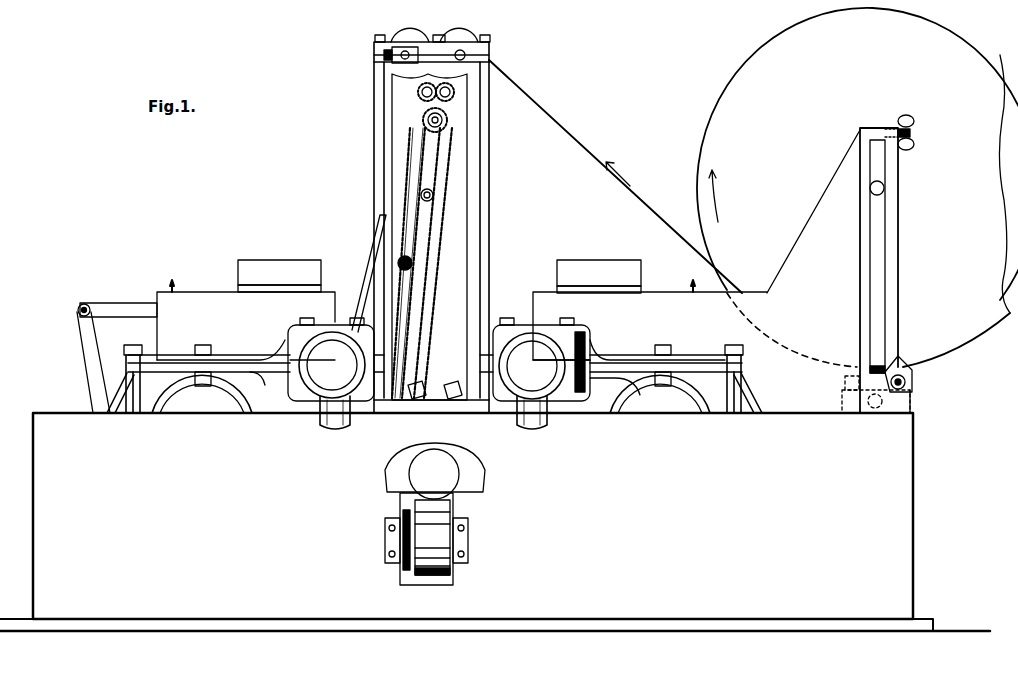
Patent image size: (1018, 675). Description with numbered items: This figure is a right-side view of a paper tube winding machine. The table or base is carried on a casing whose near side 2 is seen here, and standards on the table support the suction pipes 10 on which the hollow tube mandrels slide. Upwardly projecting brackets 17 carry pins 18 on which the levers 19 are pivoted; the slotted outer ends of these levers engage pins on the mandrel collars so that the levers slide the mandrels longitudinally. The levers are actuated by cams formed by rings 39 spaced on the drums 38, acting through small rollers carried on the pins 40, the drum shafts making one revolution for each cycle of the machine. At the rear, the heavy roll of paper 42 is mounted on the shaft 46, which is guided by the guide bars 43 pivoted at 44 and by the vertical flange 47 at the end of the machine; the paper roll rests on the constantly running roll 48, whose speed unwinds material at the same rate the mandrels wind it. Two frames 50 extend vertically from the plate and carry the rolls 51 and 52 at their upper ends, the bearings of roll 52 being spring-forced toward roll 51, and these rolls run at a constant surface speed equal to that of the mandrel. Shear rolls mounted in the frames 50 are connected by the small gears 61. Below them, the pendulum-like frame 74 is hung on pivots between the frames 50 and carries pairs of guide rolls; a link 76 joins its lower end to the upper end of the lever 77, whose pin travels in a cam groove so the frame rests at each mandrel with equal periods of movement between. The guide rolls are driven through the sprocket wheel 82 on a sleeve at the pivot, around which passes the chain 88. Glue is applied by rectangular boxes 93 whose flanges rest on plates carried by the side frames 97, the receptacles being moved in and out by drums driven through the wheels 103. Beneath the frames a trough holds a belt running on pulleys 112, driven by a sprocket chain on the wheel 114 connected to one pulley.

The side 2 is at (495, 522).
The suction pipe 10 is at (439, 373).
The bracket 17 is at (772, 388).
The pin 18 is at (433, 368).
The lever 19 is at (626, 357).
The drum 38 is at (431, 399).
The ring 39 is at (615, 397).
The pin 40 is at (630, 380).
The roll of paper 42 is at (753, 160).
The guide bar 43 is at (895, 265).
The pivot 44 is at (905, 382).
The shaft 46 is at (884, 188).
The vertical flange 47 is at (860, 277).
The roll 48 is at (897, 360).
The frame 50 is at (473, 225).
The roll 51 is at (457, 33).
The roll 52 is at (408, 33).
The small gear 61 is at (454, 92).
The pendulum-like frame 74 is at (369, 273).
The link 76 is at (120, 312).
The lever 77 is at (90, 360).
The sprocket wheel 82 is at (447, 120).
The chain 88 is at (422, 312).
The rectangular box 93 is at (439, 273).
The side frame 97 is at (560, 285).
The wheel 103 is at (430, 277).
The pulley 112 is at (435, 514).
The wheel 114 is at (400, 516).